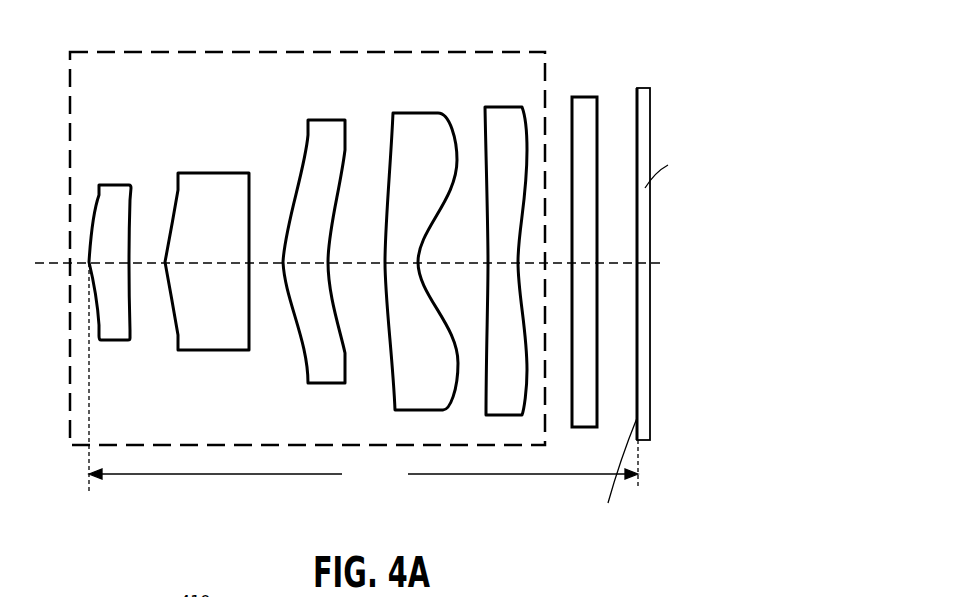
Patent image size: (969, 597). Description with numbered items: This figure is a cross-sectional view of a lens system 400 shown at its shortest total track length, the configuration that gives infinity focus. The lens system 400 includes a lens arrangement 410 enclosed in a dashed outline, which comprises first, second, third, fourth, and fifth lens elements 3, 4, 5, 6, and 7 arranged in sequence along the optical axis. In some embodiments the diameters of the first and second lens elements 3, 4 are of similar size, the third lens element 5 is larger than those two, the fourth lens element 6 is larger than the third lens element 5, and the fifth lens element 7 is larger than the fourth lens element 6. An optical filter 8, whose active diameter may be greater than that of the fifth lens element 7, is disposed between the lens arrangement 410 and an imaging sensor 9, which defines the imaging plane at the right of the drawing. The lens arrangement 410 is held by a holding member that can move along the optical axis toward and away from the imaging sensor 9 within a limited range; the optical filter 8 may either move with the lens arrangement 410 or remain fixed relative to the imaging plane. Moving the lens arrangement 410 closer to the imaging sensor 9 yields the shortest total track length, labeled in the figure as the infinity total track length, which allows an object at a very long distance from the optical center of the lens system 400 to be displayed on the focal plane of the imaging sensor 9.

The lens system 400 is at (405, 274).
The lens arrangement 410 is at (275, 52).
The first lens element 3 is at (110, 196).
The second lens element 4 is at (200, 189).
The third lens element 5 is at (320, 127).
The fourth lens element 6 is at (415, 122).
The fifth lens element 7 is at (502, 118).
The optical filter 8 is at (579, 110).
The imaging sensor 9 is at (641, 88).